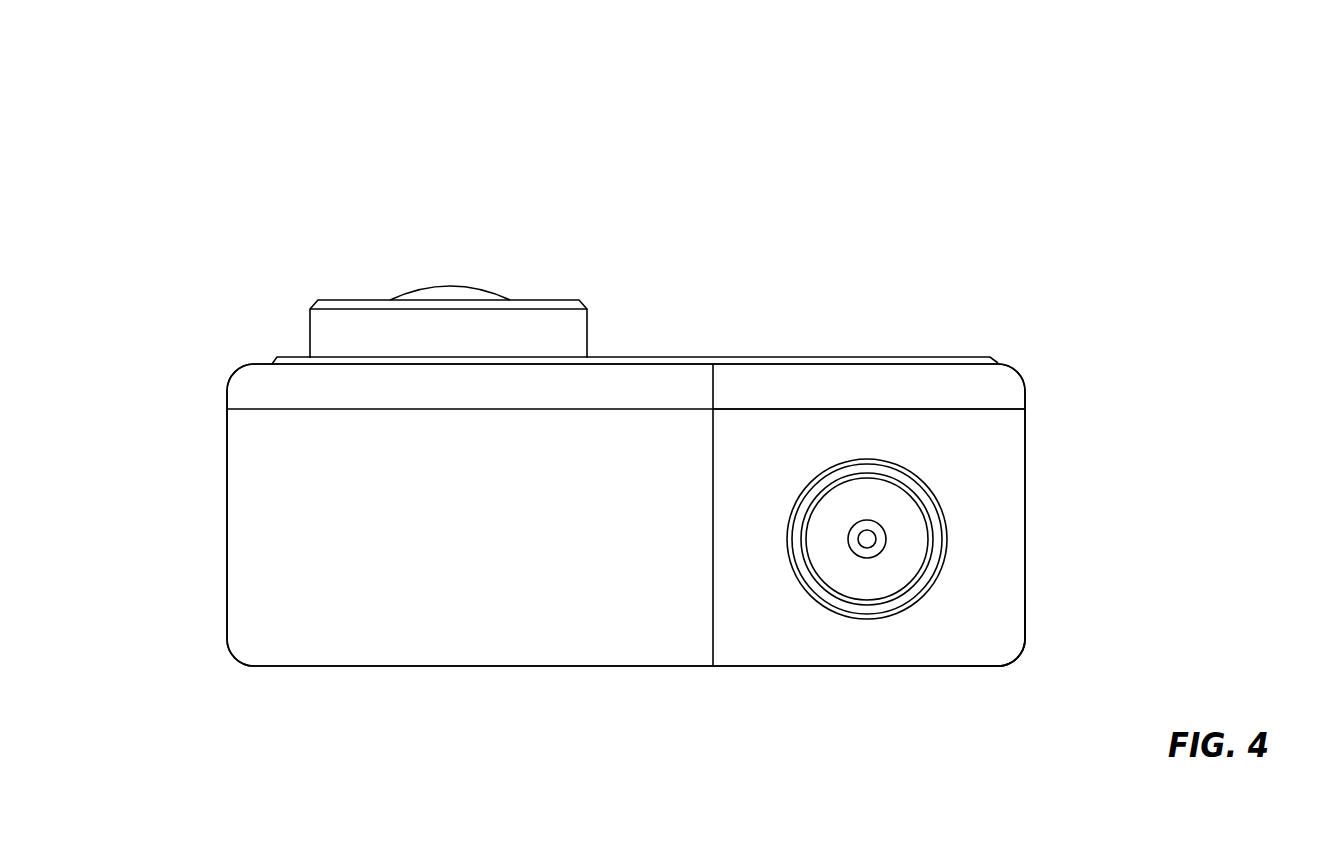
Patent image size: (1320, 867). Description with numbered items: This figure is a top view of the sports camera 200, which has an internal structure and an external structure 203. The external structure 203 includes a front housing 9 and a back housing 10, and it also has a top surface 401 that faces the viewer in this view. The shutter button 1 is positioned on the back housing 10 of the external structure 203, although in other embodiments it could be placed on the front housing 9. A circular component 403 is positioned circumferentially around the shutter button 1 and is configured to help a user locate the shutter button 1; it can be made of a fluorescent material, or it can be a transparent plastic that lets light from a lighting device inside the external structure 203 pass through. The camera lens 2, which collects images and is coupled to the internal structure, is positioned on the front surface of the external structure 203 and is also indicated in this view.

The shutter button 1 is at (830, 517).
The camera lens 2 is at (515, 300).
The front housing 9 is at (933, 385).
The back housing 10 is at (953, 615).
The sports camera 200 is at (1197, 235).
The external structure 203 is at (1025, 633).
The top surface 401 is at (263, 597).
The circular component 403 is at (812, 588).